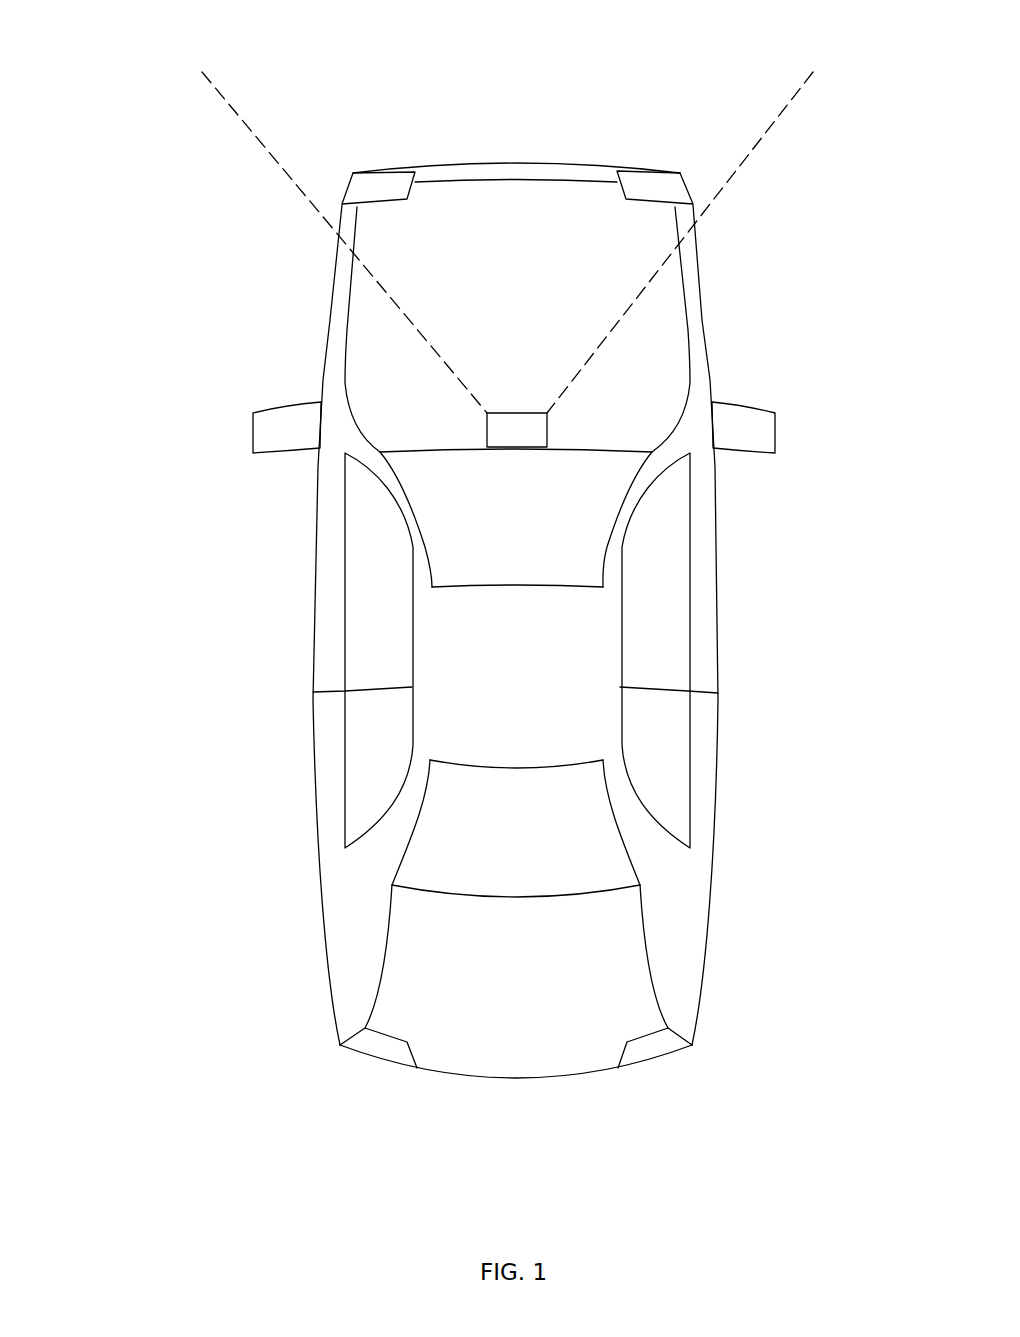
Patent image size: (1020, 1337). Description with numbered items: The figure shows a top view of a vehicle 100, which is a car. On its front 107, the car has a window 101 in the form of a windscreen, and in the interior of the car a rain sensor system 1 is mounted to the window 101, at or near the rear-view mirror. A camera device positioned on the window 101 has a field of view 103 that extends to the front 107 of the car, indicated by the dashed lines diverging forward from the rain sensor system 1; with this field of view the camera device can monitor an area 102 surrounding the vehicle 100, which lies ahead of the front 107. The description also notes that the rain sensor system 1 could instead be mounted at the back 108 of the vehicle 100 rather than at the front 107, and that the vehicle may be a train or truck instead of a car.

The rain sensor system 1 is at (547, 427).
The vehicle 100 is at (812, 240).
The window 101 is at (393, 305).
The area 102 is at (538, 28).
The field of view 103 is at (235, 113).
The front 107 is at (616, 148).
The back 108 is at (478, 1104).